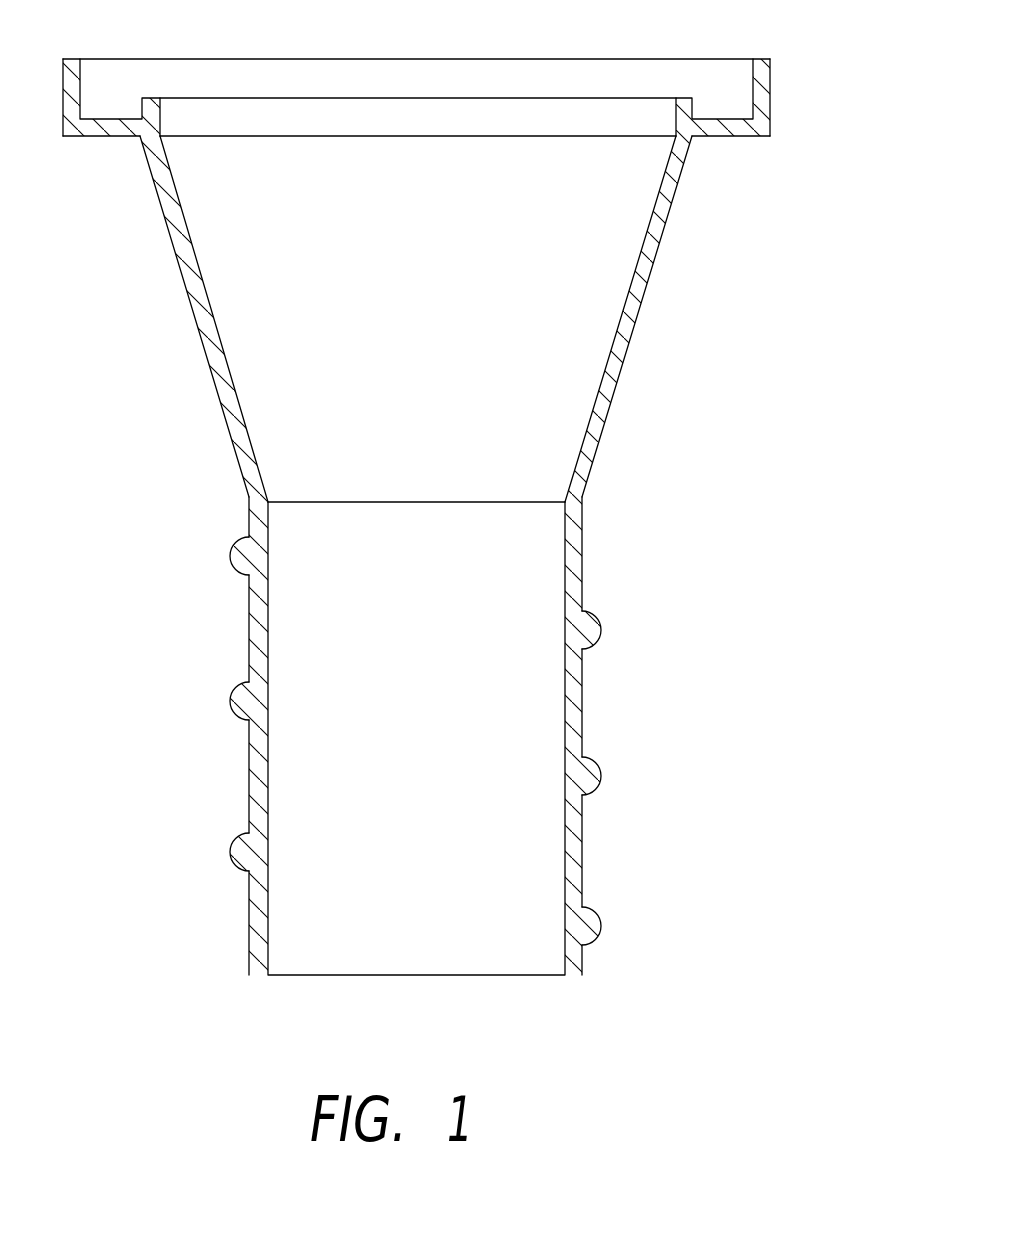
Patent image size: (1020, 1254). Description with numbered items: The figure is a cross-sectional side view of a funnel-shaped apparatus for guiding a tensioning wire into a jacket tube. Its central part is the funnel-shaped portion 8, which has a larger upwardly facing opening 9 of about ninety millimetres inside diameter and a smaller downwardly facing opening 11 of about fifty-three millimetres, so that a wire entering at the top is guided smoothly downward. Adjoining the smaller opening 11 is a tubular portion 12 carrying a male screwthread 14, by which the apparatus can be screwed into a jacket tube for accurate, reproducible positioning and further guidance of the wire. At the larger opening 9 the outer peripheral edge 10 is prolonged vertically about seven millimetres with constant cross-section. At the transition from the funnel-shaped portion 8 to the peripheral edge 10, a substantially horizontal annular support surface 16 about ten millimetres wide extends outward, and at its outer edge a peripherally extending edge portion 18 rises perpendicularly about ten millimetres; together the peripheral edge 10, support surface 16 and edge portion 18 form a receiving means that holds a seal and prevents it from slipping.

The funnel-shaped portion 8 is at (422, 296).
The upwardly facing opening 9 is at (354, 146).
The outer peripheral edge 10 is at (131, 146).
The downwardly facing opening 11 is at (424, 490).
The tubular portion 12 is at (413, 741).
The male screwthread 14 is at (229, 824).
The support surface 16 is at (723, 148).
The peripherally extending edge portion 18 is at (780, 79).